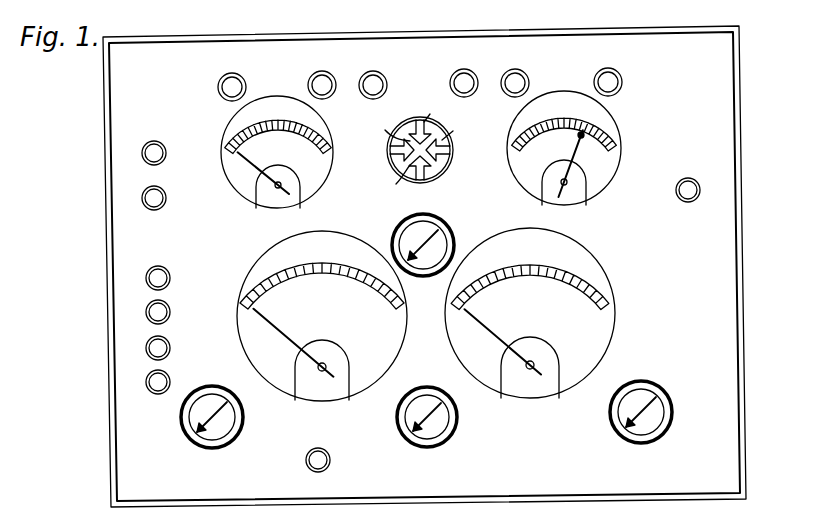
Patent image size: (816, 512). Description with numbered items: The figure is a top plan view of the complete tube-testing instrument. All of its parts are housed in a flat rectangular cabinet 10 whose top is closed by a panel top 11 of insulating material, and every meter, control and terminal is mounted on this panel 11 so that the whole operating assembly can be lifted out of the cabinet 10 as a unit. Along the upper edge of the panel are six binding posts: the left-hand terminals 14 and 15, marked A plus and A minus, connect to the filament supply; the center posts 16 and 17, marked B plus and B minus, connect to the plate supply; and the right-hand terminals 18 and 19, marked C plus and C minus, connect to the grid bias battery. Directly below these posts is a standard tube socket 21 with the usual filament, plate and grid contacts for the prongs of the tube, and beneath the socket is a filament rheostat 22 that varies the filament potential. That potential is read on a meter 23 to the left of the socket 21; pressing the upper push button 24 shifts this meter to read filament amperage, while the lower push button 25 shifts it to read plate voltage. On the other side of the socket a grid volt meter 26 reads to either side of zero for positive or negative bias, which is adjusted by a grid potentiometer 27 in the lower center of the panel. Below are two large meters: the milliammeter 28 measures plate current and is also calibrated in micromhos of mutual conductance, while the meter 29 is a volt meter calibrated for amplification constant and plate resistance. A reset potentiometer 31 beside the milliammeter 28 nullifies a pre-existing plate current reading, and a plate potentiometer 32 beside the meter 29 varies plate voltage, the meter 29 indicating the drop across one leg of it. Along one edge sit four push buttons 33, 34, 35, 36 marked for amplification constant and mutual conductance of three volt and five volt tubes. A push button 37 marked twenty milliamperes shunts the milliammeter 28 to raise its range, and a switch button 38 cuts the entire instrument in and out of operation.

The cabinet 10 is at (112, 421).
The panel top 11 is at (114, 108).
The A+ terminal 14 is at (232, 73).
The A— terminal 15 is at (322, 71).
The B+ binding post 16 is at (373, 71).
The B— binding post 17 is at (464, 69).
The C+ terminal 18 is at (515, 69).
The C— terminal 19 is at (608, 68).
The tube socket 21 is at (411, 121).
The filament rheostat 22 is at (423, 277).
The meter 23 is at (226, 126).
The push button 24 is at (155, 141).
The push button 25 is at (166, 196).
The grid volt meter 26 is at (606, 111).
The grid potentiometer 27 is at (430, 446).
The milliammeter 28 is at (243, 297).
The meter 29 is at (601, 287).
The reset potentiometer 31 is at (222, 438).
The plate potentiometer 32 is at (667, 404).
The push button 33 is at (163, 268).
The push button 34 is at (170, 312).
The push button 35 is at (170, 347).
The push button 36 is at (163, 394).
The push button 37 is at (328, 468).
The switch button 38 is at (692, 201).